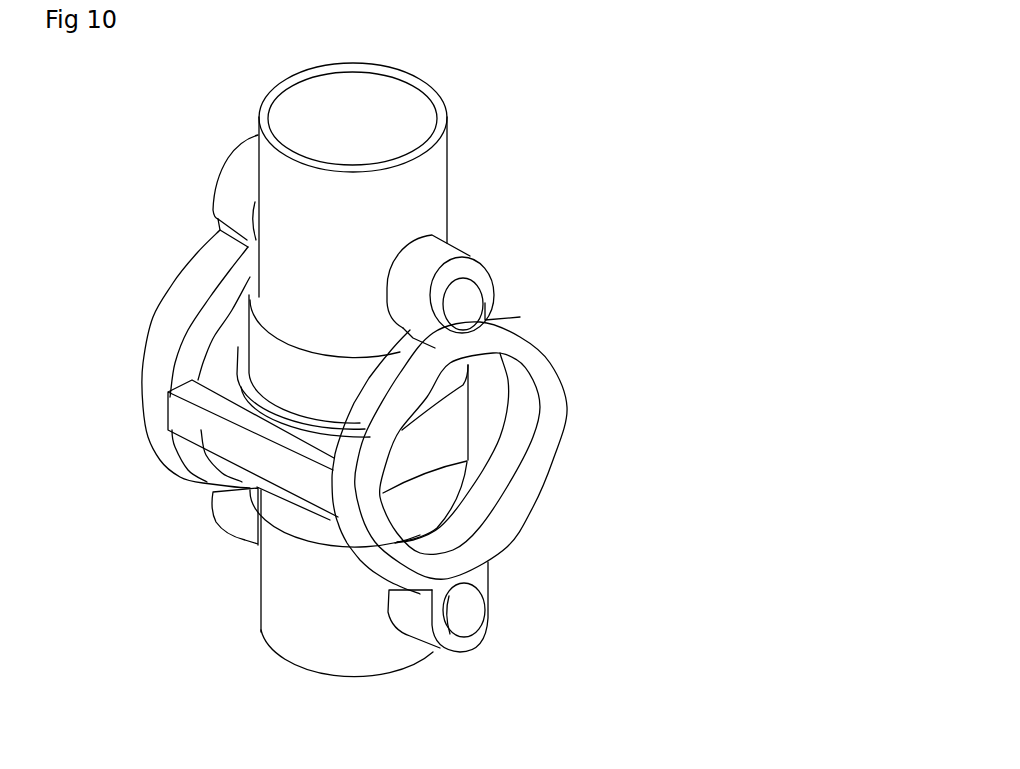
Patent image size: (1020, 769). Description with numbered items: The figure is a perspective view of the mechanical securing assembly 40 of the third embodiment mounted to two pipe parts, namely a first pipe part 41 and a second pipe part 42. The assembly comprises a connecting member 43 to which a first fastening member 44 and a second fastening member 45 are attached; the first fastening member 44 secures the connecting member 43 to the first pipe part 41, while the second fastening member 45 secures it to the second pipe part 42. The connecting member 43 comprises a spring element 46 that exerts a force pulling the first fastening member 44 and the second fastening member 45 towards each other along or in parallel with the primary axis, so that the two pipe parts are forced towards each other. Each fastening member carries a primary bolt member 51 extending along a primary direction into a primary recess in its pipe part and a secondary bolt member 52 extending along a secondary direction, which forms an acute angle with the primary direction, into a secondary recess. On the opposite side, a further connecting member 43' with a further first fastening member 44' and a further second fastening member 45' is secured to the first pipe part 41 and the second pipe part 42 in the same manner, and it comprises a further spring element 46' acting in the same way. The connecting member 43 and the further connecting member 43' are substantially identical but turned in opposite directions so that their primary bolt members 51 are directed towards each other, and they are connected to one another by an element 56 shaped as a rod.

The mechanical securing assembly 40 is at (665, 333).
The first pipe part 41 is at (420, 178).
The second pipe part 42 is at (290, 590).
The connecting member 43 is at (539, 448).
The further connecting member 43' is at (146, 353).
The first fastening member 44 is at (535, 246).
The further first fastening member 44' is at (150, 177).
The second fastening member 45 is at (536, 576).
The further second fastening member 45' is at (150, 492).
The spring element 46 is at (532, 419).
The further spring element 46' is at (146, 339).
The primary bolt member 51 is at (463, 303).
The secondary bolt member 52 is at (467, 608).
The element 56 is at (208, 425).